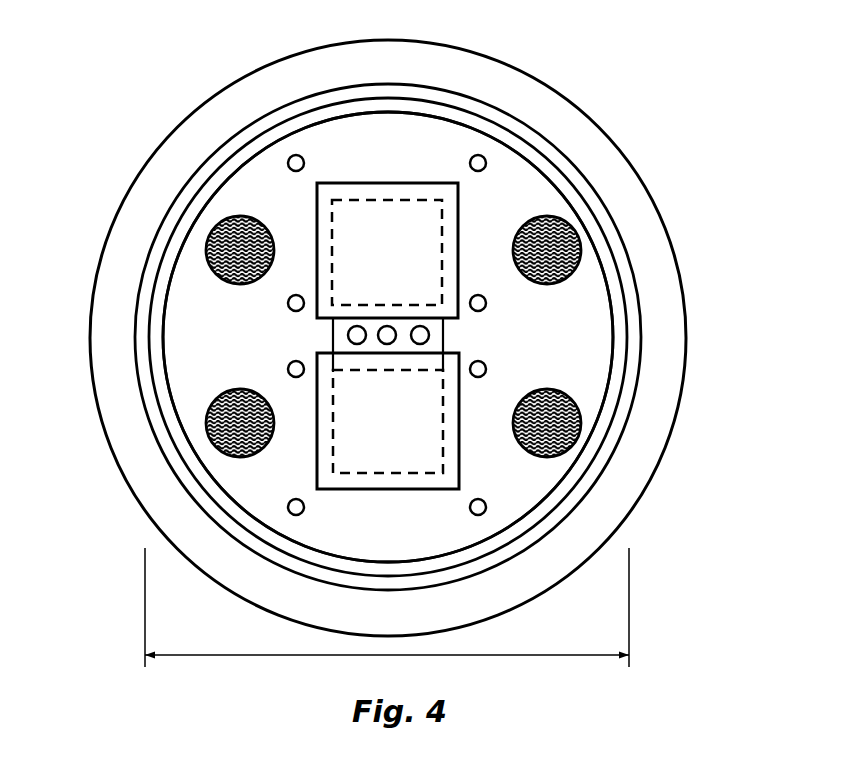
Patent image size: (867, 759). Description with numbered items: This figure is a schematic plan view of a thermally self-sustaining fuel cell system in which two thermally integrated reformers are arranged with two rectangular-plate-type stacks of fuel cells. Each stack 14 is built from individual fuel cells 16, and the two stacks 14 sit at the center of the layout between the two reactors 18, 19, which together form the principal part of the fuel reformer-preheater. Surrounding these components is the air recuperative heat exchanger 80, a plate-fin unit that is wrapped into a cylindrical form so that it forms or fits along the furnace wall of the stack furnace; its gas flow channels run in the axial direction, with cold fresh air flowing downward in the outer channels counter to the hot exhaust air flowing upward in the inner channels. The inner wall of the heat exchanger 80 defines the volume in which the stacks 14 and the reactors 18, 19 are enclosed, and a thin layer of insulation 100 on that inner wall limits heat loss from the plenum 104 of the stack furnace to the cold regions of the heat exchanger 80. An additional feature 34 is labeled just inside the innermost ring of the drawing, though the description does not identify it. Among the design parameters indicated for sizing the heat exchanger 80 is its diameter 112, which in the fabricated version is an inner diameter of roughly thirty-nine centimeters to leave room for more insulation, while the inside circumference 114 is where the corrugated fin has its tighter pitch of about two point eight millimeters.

The stack 14 is at (460, 197).
The fuel cells 16 is at (525, 120).
The reactor 18 is at (202, 245).
The reactor 19 is at (582, 265).
The inner edge 34 is at (440, 118).
The air recuperative heat exchanger 80 is at (605, 197).
The insulation 100 is at (590, 228).
The plenum 104 is at (550, 329).
The diameter 112 is at (345, 655).
The inside circumference 114 is at (483, 115).